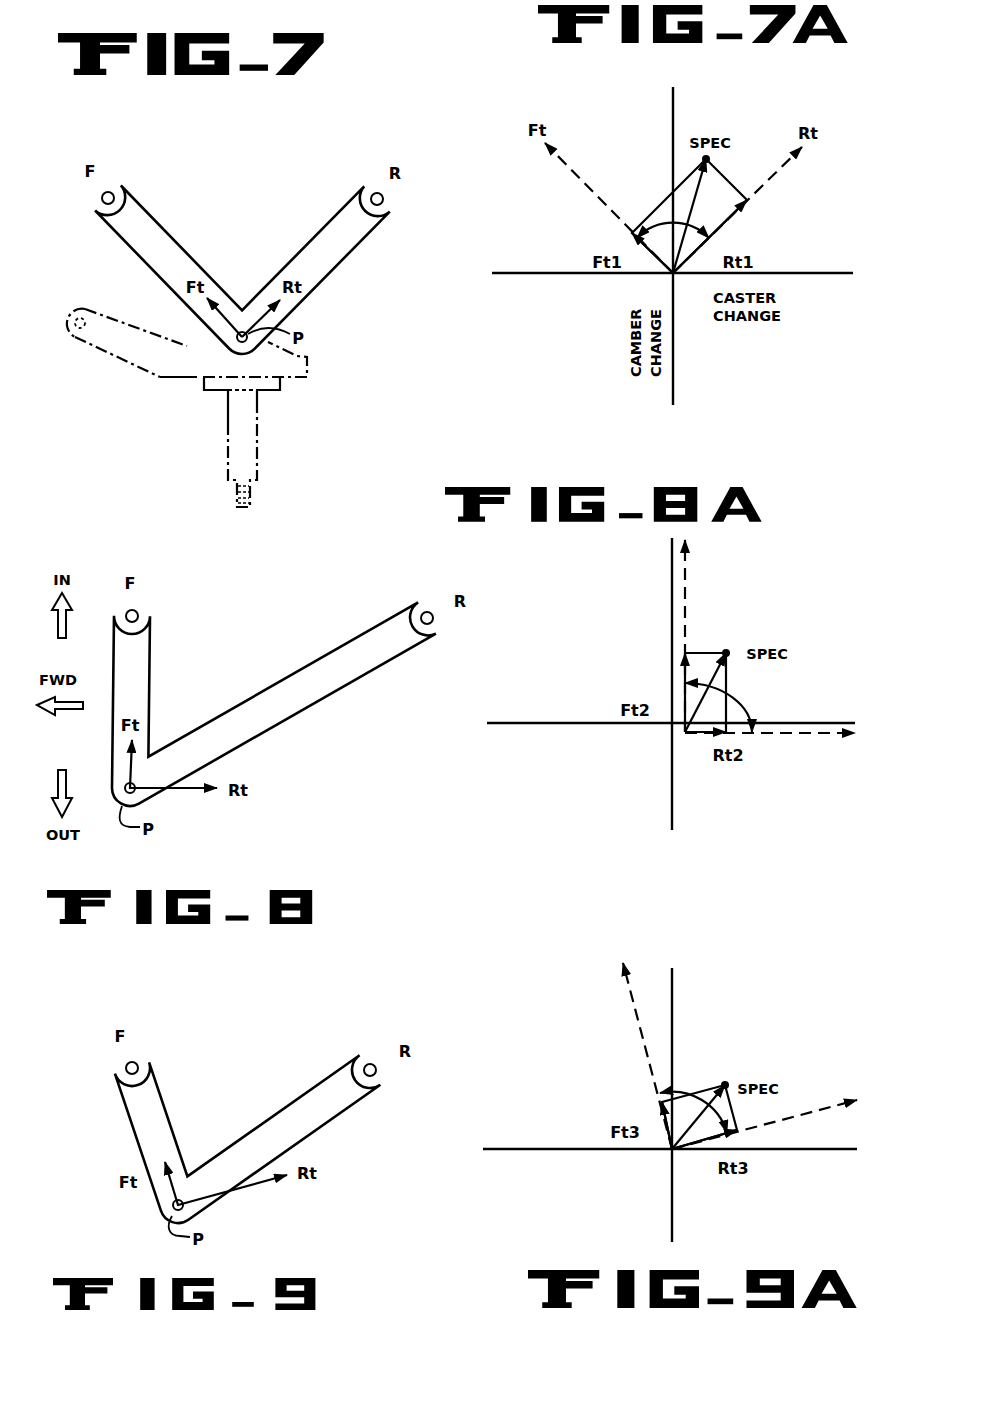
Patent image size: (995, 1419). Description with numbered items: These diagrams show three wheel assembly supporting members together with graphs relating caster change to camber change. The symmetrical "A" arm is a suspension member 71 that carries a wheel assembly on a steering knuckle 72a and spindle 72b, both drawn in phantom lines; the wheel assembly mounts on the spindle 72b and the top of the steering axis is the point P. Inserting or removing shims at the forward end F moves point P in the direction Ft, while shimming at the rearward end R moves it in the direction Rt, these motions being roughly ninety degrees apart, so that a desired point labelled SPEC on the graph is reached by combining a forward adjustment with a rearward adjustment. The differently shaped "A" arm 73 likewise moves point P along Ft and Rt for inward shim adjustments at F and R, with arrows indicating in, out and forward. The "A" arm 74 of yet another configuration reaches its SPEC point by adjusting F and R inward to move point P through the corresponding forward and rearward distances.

In FIG. 7, the suspension member 71 is at (317, 275).
In FIG. 7, the steering knuckle 72a is at (165, 377).
In FIG. 7, the spindle 72b is at (258, 413).
In FIG. 8, the "A" arm 73 is at (335, 652).
In FIG. 9, the "A" arm 74 is at (317, 1095).